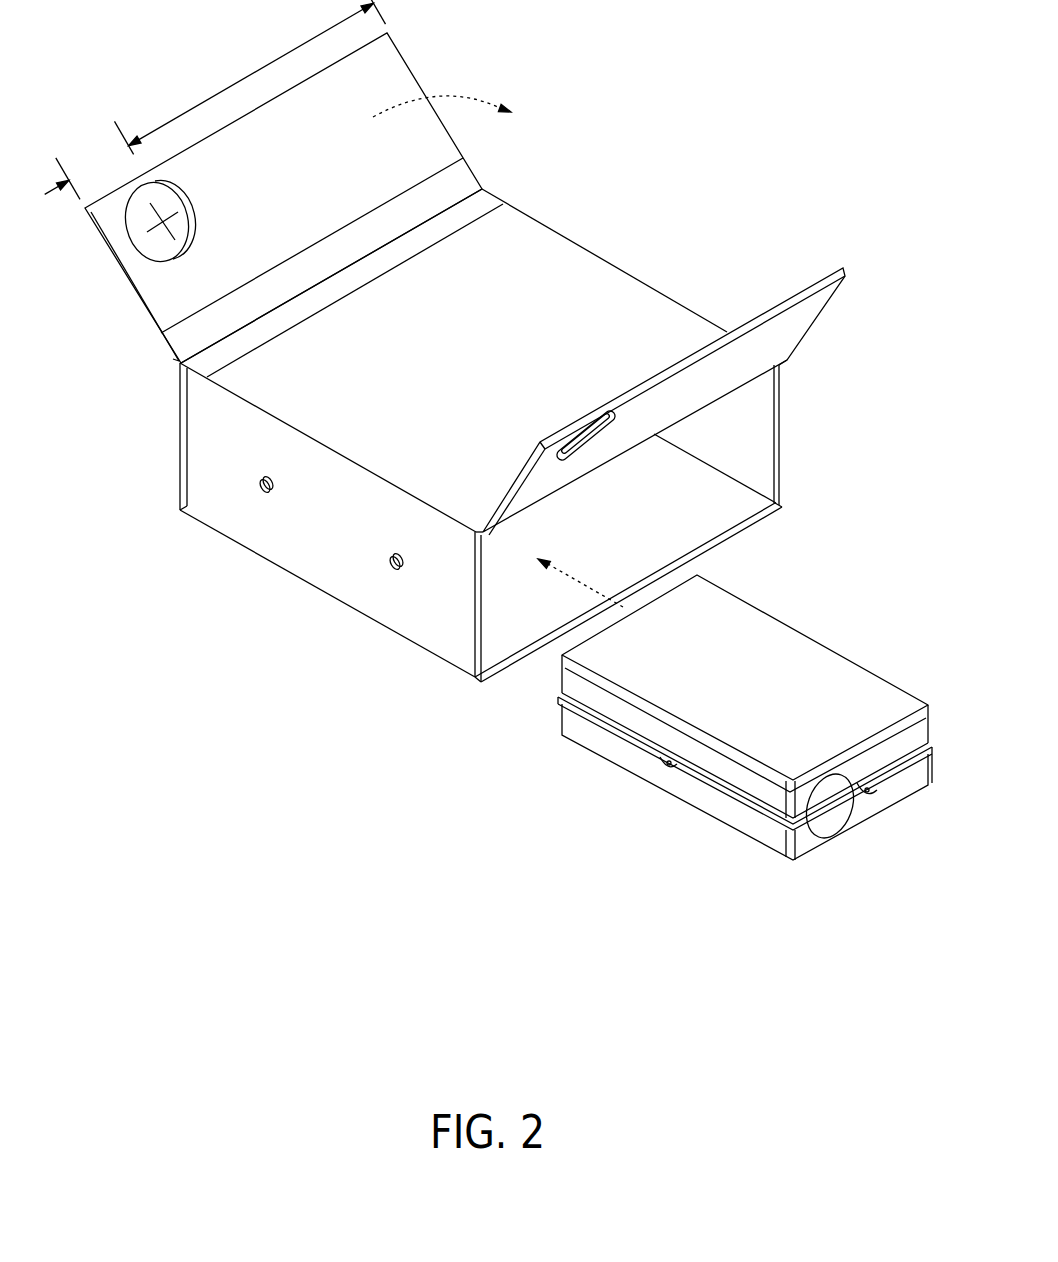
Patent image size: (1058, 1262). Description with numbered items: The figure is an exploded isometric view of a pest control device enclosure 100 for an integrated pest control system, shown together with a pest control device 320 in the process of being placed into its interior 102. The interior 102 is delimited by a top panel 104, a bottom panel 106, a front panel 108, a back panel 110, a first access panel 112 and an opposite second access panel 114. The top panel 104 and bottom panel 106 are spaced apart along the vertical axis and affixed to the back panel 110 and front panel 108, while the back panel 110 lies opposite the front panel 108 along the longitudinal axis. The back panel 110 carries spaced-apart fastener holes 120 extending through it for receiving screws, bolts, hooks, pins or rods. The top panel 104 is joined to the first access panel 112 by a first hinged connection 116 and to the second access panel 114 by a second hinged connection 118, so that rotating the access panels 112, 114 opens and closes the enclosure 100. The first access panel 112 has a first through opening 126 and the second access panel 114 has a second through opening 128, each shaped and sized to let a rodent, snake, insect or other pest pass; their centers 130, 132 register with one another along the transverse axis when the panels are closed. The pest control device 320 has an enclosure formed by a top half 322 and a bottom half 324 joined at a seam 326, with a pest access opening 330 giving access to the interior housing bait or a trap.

The pest control device enclosure 100 is at (705, 72).
The interior 102 is at (680, 512).
The top panel 104 is at (580, 287).
The bottom panel 106 is at (524, 621).
The front panel 108 is at (778, 423).
The back panel 110 is at (318, 542).
The first access panel 112 is at (393, 68).
The second access panel 114 is at (793, 328).
The first hinged connection 116 is at (453, 202).
The second hinged connection 118 is at (476, 530).
The fastener holes 120 is at (263, 493).
The first through opening 126 is at (197, 207).
The second through opening 128 is at (612, 427).
The center 130 is at (163, 227).
The center 132 is at (590, 438).
The pest control device 320 is at (830, 608).
The top half 322 is at (828, 667).
The bottom half 324 is at (735, 835).
The seam 326 is at (930, 748).
The pest access opening 330 is at (850, 818).